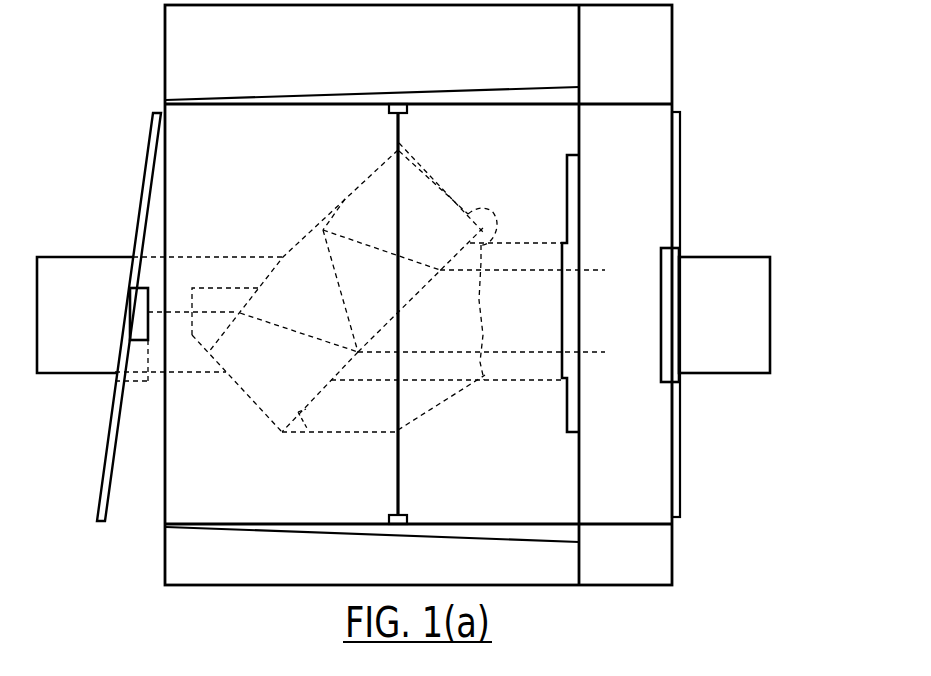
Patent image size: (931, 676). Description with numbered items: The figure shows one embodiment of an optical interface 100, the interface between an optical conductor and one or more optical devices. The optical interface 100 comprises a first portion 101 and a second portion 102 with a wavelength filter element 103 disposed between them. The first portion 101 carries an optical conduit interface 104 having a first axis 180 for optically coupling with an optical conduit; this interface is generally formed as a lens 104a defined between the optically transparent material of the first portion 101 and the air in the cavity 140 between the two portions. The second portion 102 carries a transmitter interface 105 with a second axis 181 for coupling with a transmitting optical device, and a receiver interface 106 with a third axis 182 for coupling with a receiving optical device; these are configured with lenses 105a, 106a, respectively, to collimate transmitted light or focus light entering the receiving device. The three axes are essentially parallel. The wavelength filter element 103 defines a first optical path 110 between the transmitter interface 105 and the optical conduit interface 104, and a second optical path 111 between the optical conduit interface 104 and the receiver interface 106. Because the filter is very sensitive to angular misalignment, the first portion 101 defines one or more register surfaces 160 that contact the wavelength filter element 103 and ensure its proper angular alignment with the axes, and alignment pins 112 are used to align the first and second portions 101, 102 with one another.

The optical interface 100 is at (718, 120).
The first portion 101 is at (165, 187).
The second portion 102 is at (513, 142).
The wavelength filter element 103 is at (173, 372).
The optical conduit interface 104 is at (193, 303).
The lens 104a is at (198, 303).
The transmitter interface 105 is at (484, 377).
The lens 105a is at (467, 353).
The receiver interface 106 is at (483, 245).
The lens 106a is at (483, 259).
The first optical path 110 is at (290, 330).
The second optical path 111 is at (398, 283).
The alignment pins 112 is at (752, 268).
The cavity 140 is at (224, 298).
The register surface 160 is at (372, 181).
The first axis 180 is at (139, 314).
The second axis 181 is at (508, 350).
The third axis 182 is at (515, 270).